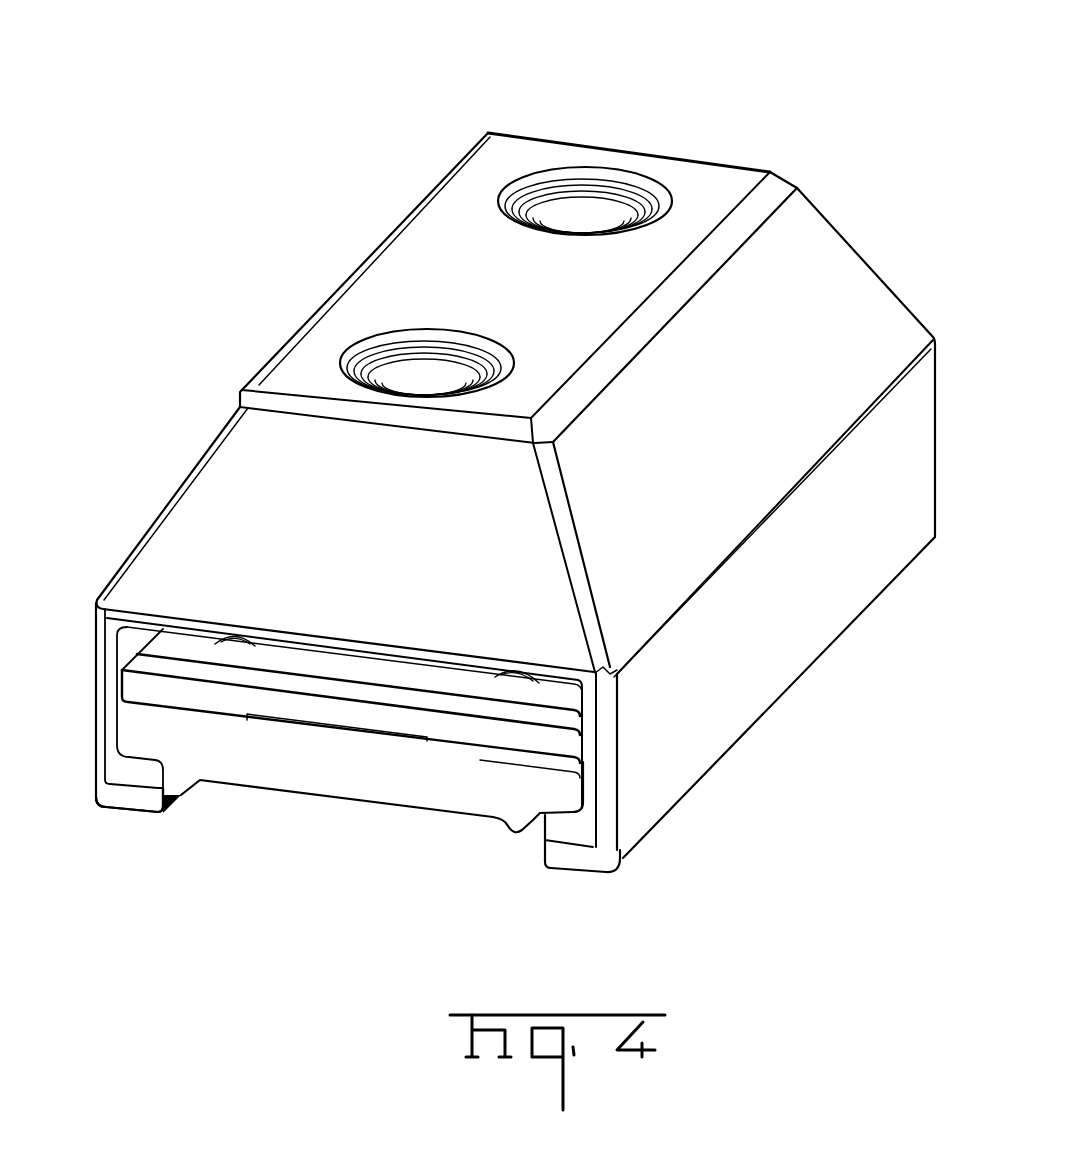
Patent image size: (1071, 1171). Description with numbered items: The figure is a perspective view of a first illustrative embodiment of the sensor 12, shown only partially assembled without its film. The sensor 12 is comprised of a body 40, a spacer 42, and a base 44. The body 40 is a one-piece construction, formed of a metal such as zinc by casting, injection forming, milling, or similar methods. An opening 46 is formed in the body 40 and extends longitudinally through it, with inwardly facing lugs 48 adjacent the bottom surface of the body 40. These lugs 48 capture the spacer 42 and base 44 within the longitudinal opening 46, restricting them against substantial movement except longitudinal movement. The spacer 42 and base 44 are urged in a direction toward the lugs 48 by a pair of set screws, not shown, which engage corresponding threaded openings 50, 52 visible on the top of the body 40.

The sensor 12 is at (863, 624).
The body 40 is at (825, 263).
The spacer 42 is at (310, 672).
The base 44 is at (347, 787).
The opening 46 is at (130, 643).
The lugs 48 is at (150, 800).
The threaded opening 50 is at (378, 335).
The threaded opening 52 is at (585, 178).